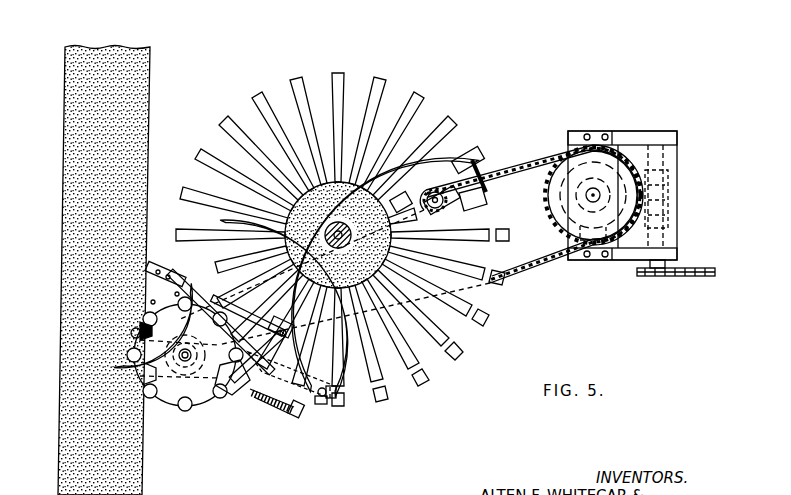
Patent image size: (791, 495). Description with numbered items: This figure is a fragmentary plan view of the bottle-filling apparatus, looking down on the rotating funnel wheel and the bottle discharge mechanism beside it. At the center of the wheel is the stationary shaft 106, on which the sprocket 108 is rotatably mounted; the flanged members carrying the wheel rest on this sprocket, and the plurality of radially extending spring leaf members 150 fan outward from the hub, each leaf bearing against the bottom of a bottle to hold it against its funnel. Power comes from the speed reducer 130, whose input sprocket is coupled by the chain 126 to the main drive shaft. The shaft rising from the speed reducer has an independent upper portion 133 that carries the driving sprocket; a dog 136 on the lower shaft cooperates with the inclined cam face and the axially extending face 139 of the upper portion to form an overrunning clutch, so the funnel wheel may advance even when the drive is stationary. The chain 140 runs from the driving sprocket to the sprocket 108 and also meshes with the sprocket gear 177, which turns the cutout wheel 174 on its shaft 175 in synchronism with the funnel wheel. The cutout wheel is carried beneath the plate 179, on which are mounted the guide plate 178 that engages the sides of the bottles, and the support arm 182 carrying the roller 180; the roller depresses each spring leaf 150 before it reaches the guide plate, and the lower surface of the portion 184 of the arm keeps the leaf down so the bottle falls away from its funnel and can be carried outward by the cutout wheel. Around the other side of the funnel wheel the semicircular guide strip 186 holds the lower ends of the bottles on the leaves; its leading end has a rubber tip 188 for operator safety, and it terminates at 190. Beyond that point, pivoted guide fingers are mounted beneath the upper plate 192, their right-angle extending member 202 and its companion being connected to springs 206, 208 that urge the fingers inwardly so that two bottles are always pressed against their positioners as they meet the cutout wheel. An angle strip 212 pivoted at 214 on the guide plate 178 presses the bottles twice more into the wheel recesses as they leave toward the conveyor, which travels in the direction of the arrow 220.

The stationary shaft 106 is at (338, 235).
The sprocket 108 is at (223, 150).
The chain 126 is at (690, 277).
The speed reducer 130 is at (632, 133).
The independent upper portion of the shaft 133 is at (598, 147).
The dog 136 is at (610, 257).
The axially extending face 139 is at (581, 250).
The chain 140 is at (530, 165).
The spring leaf members 150 is at (344, 74).
The cutout wheel 174 is at (143, 378).
The shaft 175 is at (197, 341).
The sprocket gear 177 is at (185, 354).
The guide plate 178 is at (146, 306).
The plate 179 is at (150, 268).
The roller 180 is at (250, 390).
The support arm 182 is at (172, 251).
The portion of the roller support arm 184 is at (330, 249).
The semicircular guide strip 186 is at (483, 300).
The rubber tip 188 is at (480, 160).
The guide strip termination 190 is at (327, 400).
The upper plate 192 is at (240, 392).
The right angle extending member 202 is at (323, 407).
The spring 206 is at (287, 410).
The spring 208 is at (297, 417).
The angle strip 212 is at (138, 326).
The pivot 214 is at (130, 333).
The arrow 220 is at (102, 457).